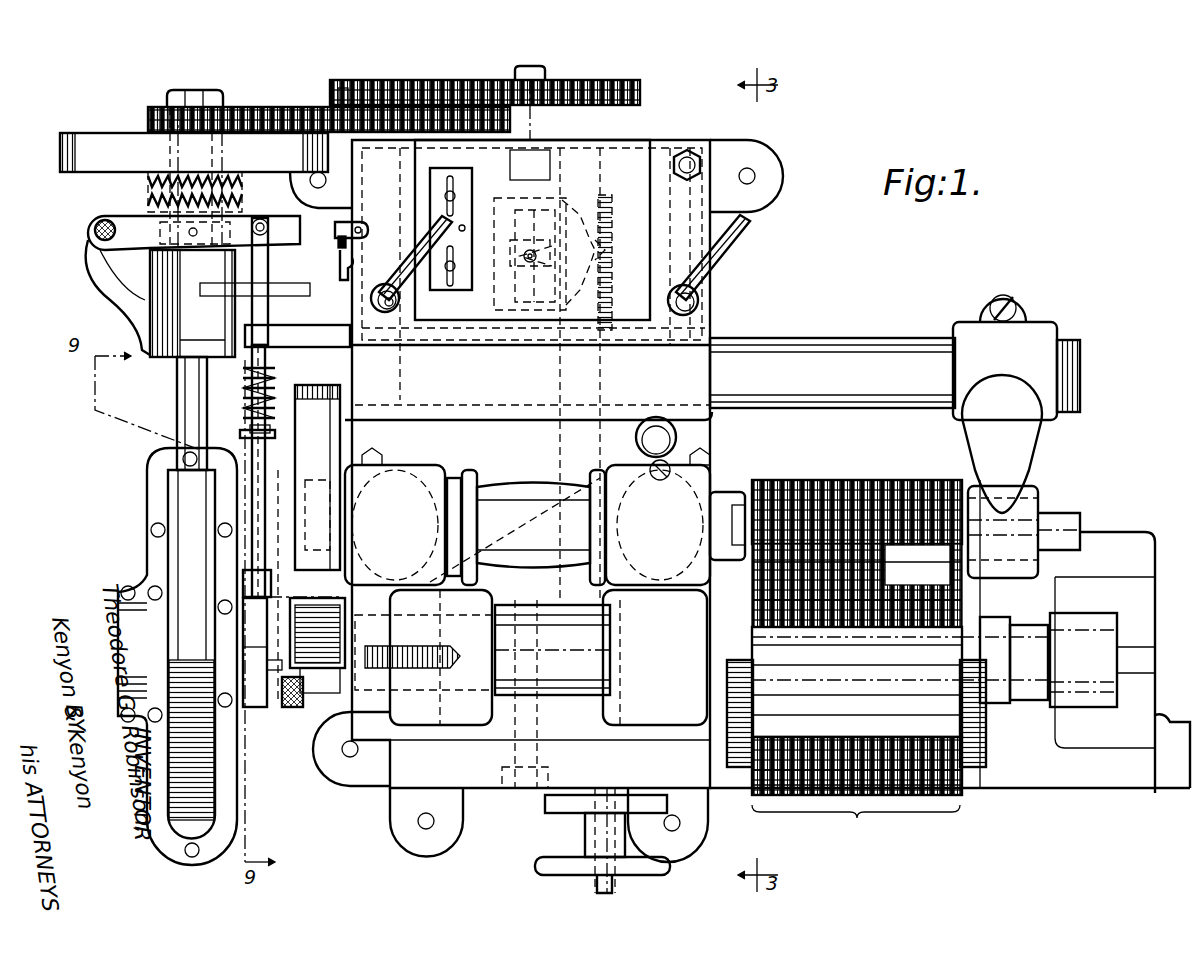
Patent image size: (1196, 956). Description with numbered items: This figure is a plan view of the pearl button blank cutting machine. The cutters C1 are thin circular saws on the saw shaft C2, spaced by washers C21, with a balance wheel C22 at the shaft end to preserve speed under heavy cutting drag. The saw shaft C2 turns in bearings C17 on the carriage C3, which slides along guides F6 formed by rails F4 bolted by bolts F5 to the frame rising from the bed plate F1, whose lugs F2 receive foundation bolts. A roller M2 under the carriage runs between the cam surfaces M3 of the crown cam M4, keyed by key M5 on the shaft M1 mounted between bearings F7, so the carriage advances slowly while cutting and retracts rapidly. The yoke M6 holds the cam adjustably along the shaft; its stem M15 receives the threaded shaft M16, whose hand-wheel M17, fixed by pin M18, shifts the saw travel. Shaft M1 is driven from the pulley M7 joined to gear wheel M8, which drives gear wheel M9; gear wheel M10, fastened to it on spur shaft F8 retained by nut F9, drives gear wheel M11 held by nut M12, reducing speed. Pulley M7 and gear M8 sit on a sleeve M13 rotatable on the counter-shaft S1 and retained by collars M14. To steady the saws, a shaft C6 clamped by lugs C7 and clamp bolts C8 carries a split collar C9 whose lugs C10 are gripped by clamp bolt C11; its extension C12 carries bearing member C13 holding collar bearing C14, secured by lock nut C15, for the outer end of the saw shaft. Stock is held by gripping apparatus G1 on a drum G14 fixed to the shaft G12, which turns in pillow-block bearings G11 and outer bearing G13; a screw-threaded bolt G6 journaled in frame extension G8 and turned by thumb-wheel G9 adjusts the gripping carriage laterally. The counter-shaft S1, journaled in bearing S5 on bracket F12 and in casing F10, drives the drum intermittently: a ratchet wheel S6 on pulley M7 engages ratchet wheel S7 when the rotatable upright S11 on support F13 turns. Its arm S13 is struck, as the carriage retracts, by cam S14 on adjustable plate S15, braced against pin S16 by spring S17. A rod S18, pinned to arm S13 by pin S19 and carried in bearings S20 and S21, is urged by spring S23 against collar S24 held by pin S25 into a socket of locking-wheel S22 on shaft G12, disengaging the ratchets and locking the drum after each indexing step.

The pulley M7 is at (60, 152).
The gear wheel M8 is at (150, 112).
The gear wheel M9 is at (255, 107).
The gear wheel M10 is at (330, 90).
The gear wheel M11 is at (645, 93).
The nut M12 is at (545, 72).
The sleeve M13 is at (172, 118).
The collars M14 is at (180, 85).
The shaft M1 is at (542, 178).
The roller M2 is at (538, 268).
The cam surfaces M3 is at (508, 258).
The crown cam M4 is at (500, 292).
The key M5 is at (530, 300).
The yoke M6 is at (575, 210).
The stem M15 is at (615, 285).
The shaft M16 is at (612, 362).
The hand-wheel M17 is at (668, 866).
The pin M18 is at (585, 840).
The bed plate F1 is at (703, 270).
The lugs F2 is at (755, 162).
The rails F4 is at (405, 162).
The bolts F5 is at (692, 150).
The guides F6 is at (470, 160).
The bearings F7 is at (545, 140).
The spur shaft F8 is at (345, 150).
The nut F9 is at (340, 90).
The casing F10 is at (180, 494).
The bracket F12 is at (275, 300).
The support F13 is at (147, 292).
The counter-shaft S1 is at (185, 200).
The bearing S5 is at (168, 350).
The ratchet wheel S6 is at (278, 178).
The ratchet wheel S7 is at (240, 205).
The rotatable upright S11 is at (95, 233).
The arm S13 is at (278, 281).
The cam S14 is at (355, 222).
The adjustable plate S15 is at (458, 180).
The pin S16 is at (350, 238).
The spring S17 is at (335, 275).
The rod S18 is at (275, 258).
The pin S19 is at (266, 222).
The bearing S20 is at (297, 342).
The bearing S21 is at (272, 570).
The locking-wheel S22 is at (255, 708).
The spring S23 is at (278, 378).
The collar S24 is at (252, 428).
The pin S25 is at (258, 434).
The cutters C1 is at (800, 482).
The saw shaft C2 is at (527, 498).
The carriage C3 is at (515, 372).
The shaft C6 is at (830, 342).
The lugs C7 is at (395, 325).
The clamp bolts C8 is at (375, 320).
The collar C9 is at (1040, 338).
The lugs C10 is at (1028, 306).
The clamp bolt C11 is at (1010, 300).
The extension C12 is at (1028, 442).
The bearing member C13 is at (1020, 500).
The collar bearing C14 is at (988, 552).
The lock nut C15 is at (1062, 522).
The bearings C17 is at (432, 468).
The washers C21 is at (850, 500).
The balance wheel C22 is at (318, 477).
The gripping apparatus G1 is at (856, 719).
The screw-threaded bolt G6 is at (440, 638).
The extension G8 is at (345, 670).
The thumb-wheel G9 is at (292, 708).
The bearings G11 is at (548, 657).
The shaft G12 is at (275, 707).
The bearing G13 is at (1100, 618).
The drum G14 is at (857, 682).